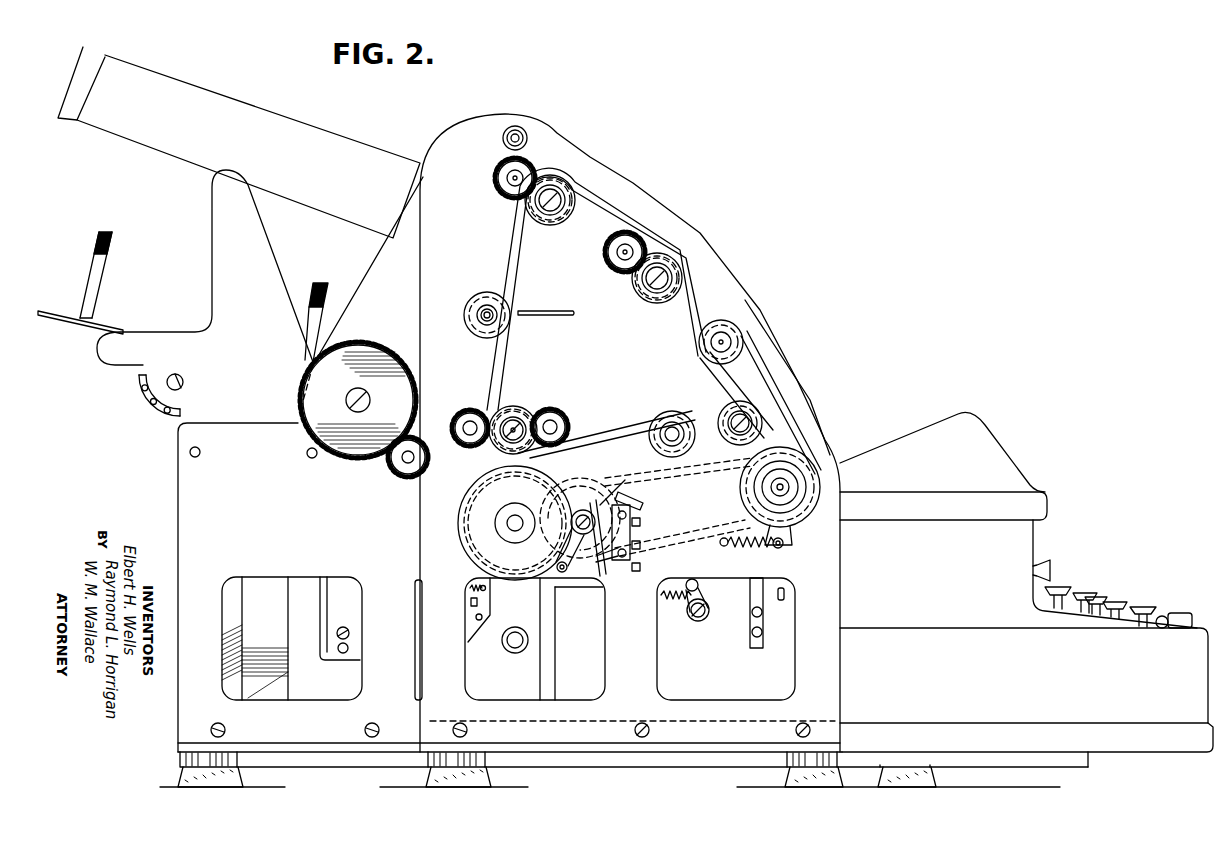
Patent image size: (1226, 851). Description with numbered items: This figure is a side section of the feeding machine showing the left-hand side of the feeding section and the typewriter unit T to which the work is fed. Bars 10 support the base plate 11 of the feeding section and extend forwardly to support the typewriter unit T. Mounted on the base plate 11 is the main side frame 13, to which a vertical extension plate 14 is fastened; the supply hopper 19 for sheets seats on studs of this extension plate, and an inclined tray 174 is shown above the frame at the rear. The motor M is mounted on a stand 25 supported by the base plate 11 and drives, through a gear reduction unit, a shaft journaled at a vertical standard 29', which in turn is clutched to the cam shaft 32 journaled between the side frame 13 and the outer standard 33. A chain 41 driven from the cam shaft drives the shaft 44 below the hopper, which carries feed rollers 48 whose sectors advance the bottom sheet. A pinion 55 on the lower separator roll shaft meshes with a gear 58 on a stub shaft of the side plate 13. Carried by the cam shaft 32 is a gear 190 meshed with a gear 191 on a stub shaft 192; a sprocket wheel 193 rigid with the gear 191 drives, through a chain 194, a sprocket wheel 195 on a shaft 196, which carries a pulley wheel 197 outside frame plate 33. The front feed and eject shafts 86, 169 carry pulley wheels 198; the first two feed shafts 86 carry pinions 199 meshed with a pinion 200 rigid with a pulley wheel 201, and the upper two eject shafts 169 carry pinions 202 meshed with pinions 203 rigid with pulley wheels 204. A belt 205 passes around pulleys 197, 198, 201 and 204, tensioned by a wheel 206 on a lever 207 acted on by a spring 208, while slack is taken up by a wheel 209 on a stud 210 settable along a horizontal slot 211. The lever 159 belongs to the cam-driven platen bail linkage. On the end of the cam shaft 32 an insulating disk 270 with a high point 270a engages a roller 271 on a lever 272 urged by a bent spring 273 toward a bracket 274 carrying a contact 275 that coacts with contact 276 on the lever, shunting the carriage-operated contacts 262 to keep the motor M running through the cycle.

The bars 10 is at (730, 761).
The base plate 11 is at (638, 748).
The main side frame 13 is at (183, 479).
The vertical extension plate 14 is at (212, 290).
The supply hopper 19 is at (104, 326).
The stand 25 is at (272, 688).
The vertical standard 29' is at (341, 648).
The cam shaft 32 is at (508, 530).
The outer standard (side frame plate) 33 is at (623, 186).
The chain 41 is at (150, 385).
The shaft 44 is at (162, 412).
The feed rollers 48 is at (143, 401).
The pinion 55 is at (400, 476).
The gear 58 is at (345, 445).
The shafts 86 is at (466, 416).
The lever 159 is at (690, 606).
The shafts 169 is at (512, 180).
The tray 174 is at (131, 122).
The gear 190 is at (466, 526).
The gear 191 is at (579, 508).
The stub shaft 192 is at (585, 512).
The sprocket wheel 193 is at (612, 490).
The chain 194 is at (690, 537).
The sprocket wheel 195 is at (678, 485).
The shaft 196 is at (786, 486).
The pulley wheel 197 is at (806, 461).
The pulley wheels 198 is at (741, 340).
The pinions 199 is at (547, 406).
The pinion 200 is at (492, 450).
The pulley wheel 201 is at (516, 444).
The pinions 202 is at (496, 172).
The pinions 203 is at (573, 212).
The pulley wheels 204 is at (549, 216).
The belt 205 is at (690, 305).
The wheel 206 is at (692, 413).
The lever 207 is at (760, 418).
The spring 208 is at (746, 549).
The wheel 209 is at (486, 297).
The stud 210 is at (483, 322).
The horizontal slot 211 is at (545, 318).
The contacts 262 is at (755, 600).
The disk 270 is at (480, 502).
The high point 270a is at (540, 577).
The roller 271 is at (566, 573).
The lever 272 is at (592, 545).
The bent spring 273 is at (606, 566).
The bracket 274 is at (640, 558).
The contact 275 is at (644, 504).
The contact 276 is at (628, 490).
The motor M is at (265, 596).
The typewriter unit T is at (1015, 551).